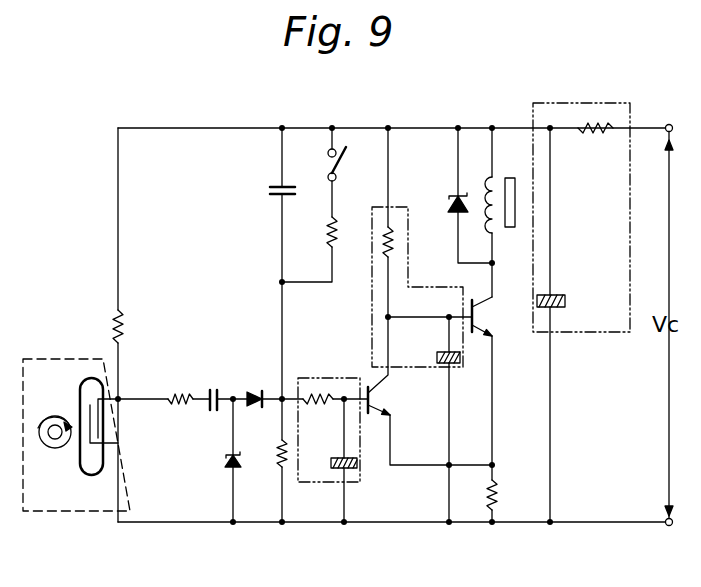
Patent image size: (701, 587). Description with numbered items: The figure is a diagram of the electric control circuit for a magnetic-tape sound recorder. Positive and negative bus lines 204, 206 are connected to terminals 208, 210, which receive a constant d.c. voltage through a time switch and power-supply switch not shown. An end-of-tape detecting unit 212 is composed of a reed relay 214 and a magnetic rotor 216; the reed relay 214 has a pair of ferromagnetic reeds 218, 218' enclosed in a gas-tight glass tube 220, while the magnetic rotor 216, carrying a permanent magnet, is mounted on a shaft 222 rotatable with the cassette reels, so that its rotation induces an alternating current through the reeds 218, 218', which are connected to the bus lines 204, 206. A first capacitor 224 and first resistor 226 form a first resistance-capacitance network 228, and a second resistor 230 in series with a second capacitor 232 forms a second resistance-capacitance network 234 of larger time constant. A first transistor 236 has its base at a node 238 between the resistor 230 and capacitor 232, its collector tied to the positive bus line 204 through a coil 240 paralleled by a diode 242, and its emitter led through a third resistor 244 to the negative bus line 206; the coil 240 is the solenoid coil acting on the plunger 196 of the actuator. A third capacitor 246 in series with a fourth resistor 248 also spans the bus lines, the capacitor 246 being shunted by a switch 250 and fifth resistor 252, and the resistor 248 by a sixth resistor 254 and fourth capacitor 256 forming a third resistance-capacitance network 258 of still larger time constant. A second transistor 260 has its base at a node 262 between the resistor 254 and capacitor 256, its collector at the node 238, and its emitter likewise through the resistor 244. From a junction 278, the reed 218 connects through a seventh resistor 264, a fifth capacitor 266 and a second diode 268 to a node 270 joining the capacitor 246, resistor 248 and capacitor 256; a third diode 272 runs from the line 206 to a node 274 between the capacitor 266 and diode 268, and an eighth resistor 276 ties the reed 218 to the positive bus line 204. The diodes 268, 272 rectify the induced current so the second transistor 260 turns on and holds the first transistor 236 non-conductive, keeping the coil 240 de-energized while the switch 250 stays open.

The plunger 196 is at (508, 228).
The positive bus line 204 is at (515, 127).
The negative bus line 206 is at (523, 522).
The terminal 208 is at (668, 124).
The terminal 210 is at (668, 527).
The end-of-tape detecting unit 212 is at (40, 358).
The reed relay 214 is at (88, 378).
The magnetic rotor 216 is at (37, 511).
The ferromagnetic reed 218 is at (136, 418).
The ferromagnetic reed 218' is at (135, 433).
The gas-tight glass tube 220 is at (93, 478).
The shaft 222 is at (48, 445).
The first capacitor 224 is at (567, 300).
The first resistor 226 is at (600, 134).
The first resistance-capacitance network 228 is at (595, 332).
The second resistor 230 is at (392, 240).
The second capacitor 232 is at (438, 365).
The second resistance-capacitance network 234 is at (372, 330).
The first transistor 236 is at (494, 330).
The node 238 is at (390, 318).
The coil 240 is at (492, 185).
The diode 242 is at (452, 200).
The third resistor 244 is at (515, 492).
The third capacitor 246 is at (270, 188).
The fourth resistor 248 is at (280, 468).
The switch 250 is at (328, 168).
The fifth resistor 252 is at (332, 232).
The sixth resistor 254 is at (320, 402).
The fourth capacitor 256 is at (358, 464).
The third resistance-capacitance network 258 is at (313, 482).
The second transistor 260 is at (388, 414).
The node 262 is at (345, 396).
The seventh resistor 264 is at (180, 395).
The fifth capacitor 266 is at (214, 390).
The second diode 268 is at (256, 392).
The node 270 is at (280, 405).
The third diode 272 is at (228, 465).
The node 274 is at (233, 405).
The eighth resistor 276 is at (123, 321).
The junction 278 is at (118, 399).